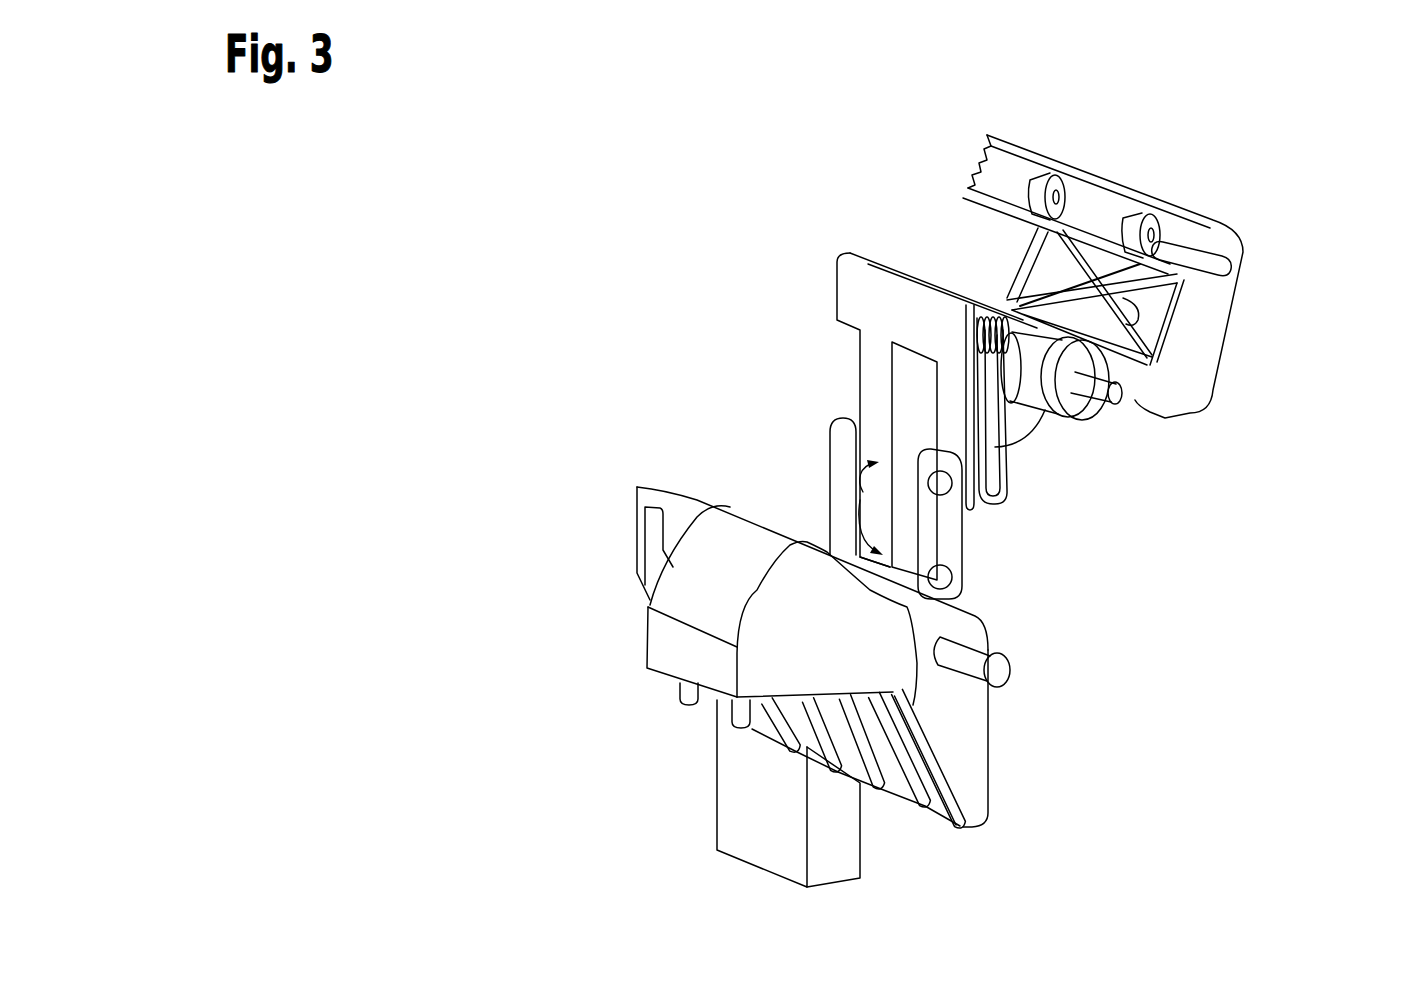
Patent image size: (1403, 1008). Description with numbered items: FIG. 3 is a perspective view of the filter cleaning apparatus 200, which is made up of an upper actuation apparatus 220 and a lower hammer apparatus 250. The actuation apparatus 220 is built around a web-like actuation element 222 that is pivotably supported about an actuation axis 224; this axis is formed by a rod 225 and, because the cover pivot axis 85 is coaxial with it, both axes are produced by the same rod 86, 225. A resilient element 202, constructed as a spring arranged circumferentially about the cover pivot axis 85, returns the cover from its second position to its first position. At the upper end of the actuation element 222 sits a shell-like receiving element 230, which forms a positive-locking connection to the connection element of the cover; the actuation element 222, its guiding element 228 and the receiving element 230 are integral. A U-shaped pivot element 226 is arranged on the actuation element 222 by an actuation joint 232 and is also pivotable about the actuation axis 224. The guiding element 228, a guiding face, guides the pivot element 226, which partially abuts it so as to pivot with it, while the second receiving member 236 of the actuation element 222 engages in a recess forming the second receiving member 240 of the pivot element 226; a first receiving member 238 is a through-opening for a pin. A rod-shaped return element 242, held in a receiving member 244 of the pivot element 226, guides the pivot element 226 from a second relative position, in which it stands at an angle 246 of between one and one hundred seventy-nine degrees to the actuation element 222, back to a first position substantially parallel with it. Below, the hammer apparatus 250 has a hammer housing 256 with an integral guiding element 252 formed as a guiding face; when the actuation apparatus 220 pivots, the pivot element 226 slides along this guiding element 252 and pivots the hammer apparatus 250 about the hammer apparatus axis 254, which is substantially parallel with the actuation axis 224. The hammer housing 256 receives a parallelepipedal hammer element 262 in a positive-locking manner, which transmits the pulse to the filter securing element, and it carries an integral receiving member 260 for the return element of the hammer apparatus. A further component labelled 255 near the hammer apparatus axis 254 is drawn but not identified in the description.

The filter cleaning apparatus 200 is at (568, 192).
The actuation apparatus 220 is at (885, 216).
The receiving element 230 is at (1207, 232).
The actuation element 222 is at (871, 416).
The guiding element 228 is at (950, 372).
The second receiving member 236 is at (850, 474).
The angle 246 is at (877, 510).
The actuation joint 232 is at (778, 428).
The resilient element 202 is at (1002, 483).
The first receiving member 238 is at (973, 512).
The pivot element 226 is at (1015, 528).
The second receiving member 240 is at (940, 483).
The return element 242 is at (940, 577).
The rod 86 is at (1159, 392).
The rod 225 is at (1159, 392).
The cover pivot axis 85 is at (1186, 412).
The actuation axis 224 is at (1123, 390).
The hammer apparatus 250 is at (605, 543).
The receiving member 260 is at (834, 587).
The receiving member 244 is at (905, 601).
The hammer housing 256 is at (970, 760).
The guiding element 252 is at (887, 790).
The hammer element 262 is at (727, 807).
The pin 255 is at (1047, 674).
The hammer apparatus axis 254 is at (1018, 682).